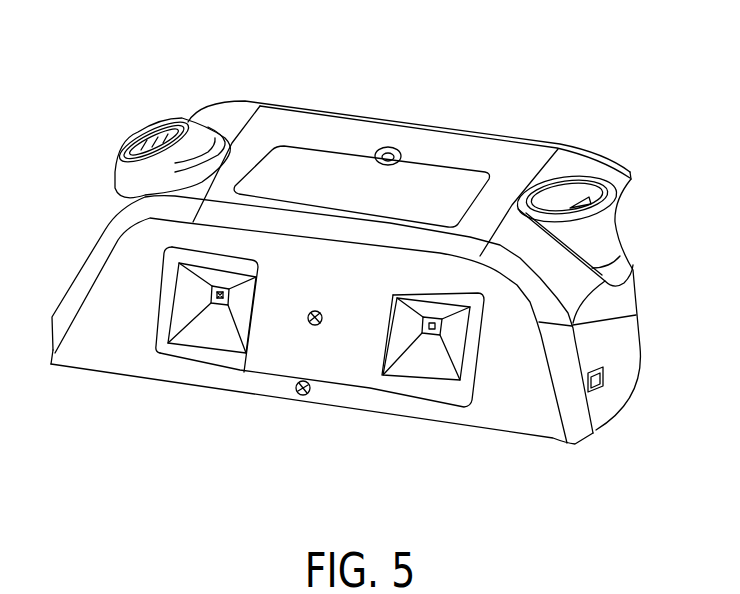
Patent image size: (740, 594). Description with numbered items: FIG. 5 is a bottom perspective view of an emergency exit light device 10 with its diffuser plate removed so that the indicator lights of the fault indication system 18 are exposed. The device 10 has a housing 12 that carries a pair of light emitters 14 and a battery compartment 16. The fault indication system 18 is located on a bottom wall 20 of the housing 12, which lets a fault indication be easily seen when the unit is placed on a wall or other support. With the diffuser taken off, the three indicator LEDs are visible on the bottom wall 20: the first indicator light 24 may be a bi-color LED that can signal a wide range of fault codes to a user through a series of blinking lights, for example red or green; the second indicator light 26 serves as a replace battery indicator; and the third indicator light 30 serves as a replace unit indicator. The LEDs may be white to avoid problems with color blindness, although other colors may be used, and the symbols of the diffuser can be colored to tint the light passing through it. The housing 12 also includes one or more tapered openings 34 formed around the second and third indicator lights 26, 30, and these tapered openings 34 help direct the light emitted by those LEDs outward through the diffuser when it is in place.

The emergency exit light device 10 is at (84, 83).
The housing 12 is at (592, 436).
The light emitters 14 is at (618, 219).
The battery compartment 16 is at (424, 163).
The fault indication system 18 is at (272, 378).
The bottom wall 20 is at (533, 368).
The first indicator light 24 is at (338, 316).
The second indicator light 26 is at (212, 299).
The third indicator light 30 is at (438, 333).
The tapered openings 34 is at (183, 305).